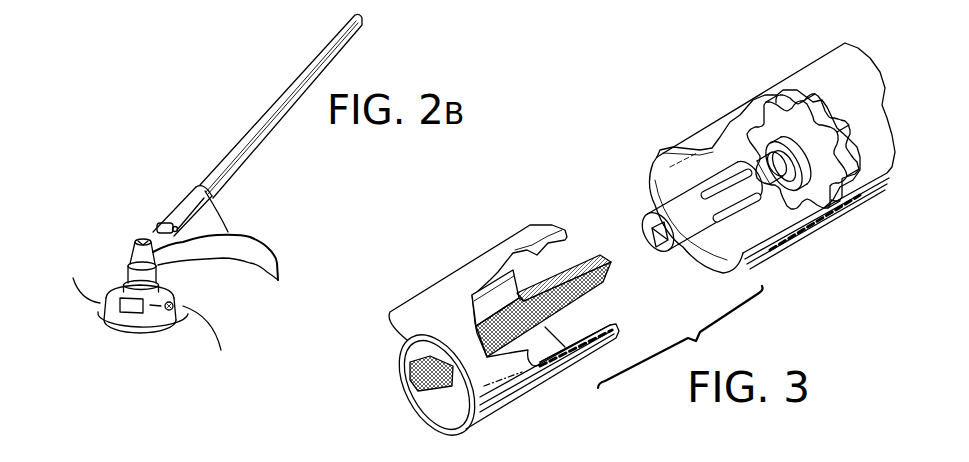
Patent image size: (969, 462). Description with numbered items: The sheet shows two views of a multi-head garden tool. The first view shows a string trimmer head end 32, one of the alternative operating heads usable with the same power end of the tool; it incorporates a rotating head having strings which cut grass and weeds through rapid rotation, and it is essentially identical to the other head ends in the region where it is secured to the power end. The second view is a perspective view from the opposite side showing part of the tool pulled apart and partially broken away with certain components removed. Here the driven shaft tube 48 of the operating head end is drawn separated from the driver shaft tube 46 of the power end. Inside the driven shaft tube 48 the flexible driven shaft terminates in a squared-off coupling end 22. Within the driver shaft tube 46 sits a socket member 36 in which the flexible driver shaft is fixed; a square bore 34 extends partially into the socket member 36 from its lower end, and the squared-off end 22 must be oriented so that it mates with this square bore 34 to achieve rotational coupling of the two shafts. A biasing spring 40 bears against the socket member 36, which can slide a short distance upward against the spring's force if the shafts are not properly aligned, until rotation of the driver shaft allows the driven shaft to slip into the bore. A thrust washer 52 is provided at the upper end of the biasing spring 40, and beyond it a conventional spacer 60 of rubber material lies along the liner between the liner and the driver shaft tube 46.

In FIG. 2B, the string trimmer head end 32 is at (114, 270).
In FIG. 3, the squared-off coupling end 22 is at (605, 285).
In FIG. 3, the square bore 34 is at (653, 233).
In FIG. 3, the socket member 36 is at (668, 203).
In FIG. 3, the biasing spring 40 is at (752, 155).
In FIG. 3, the driver shaft tube 46 is at (813, 65).
In FIG. 3, the driven shaft tube 48 is at (467, 265).
In FIG. 3, the thrust washer 52 is at (807, 182).
In FIG. 3, the spacer 60 is at (813, 102).